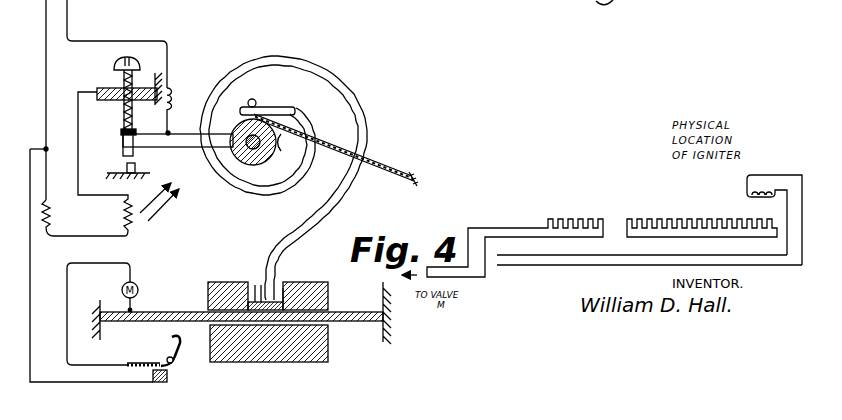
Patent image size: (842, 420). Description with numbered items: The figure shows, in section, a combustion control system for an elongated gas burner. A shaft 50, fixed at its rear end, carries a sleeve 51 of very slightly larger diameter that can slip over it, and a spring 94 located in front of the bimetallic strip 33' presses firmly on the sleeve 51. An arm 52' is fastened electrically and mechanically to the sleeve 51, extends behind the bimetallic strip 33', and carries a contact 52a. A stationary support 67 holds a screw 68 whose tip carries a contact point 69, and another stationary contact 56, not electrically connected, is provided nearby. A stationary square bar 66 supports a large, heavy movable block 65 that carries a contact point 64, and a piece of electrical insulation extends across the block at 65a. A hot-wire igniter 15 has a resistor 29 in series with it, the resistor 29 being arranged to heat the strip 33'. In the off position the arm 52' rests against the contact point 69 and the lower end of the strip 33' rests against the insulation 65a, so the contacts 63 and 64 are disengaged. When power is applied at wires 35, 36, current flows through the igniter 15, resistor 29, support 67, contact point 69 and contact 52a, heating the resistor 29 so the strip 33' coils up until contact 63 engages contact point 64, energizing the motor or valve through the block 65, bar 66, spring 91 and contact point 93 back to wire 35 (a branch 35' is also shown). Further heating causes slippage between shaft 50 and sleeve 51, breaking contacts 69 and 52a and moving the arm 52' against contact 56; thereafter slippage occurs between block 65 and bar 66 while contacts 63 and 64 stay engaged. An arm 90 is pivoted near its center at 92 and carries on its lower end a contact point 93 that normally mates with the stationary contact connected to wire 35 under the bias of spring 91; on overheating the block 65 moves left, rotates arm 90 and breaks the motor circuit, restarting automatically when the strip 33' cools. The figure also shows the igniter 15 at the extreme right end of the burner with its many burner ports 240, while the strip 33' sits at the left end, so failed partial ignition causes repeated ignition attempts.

The power wire 35 is at (33, 100).
The supply conductor branch 35' is at (91, 265).
The power wire 36 is at (67, 23).
The electrical hot-wire igniter 15 is at (55, 210).
The resistor 29 is at (133, 222).
The stationary support 67 is at (97, 90).
The screw 68 is at (114, 64).
The contact 52a is at (144, 102).
The contact point 69 is at (121, 129).
The arm 52' is at (178, 153).
The stationary contact 56 is at (127, 166).
The bimetallic strip 33' is at (289, 178).
The shaft 50 is at (283, 140).
The sleeve 51 is at (262, 163).
The spring 94 is at (337, 146).
The movable block 65 is at (207, 287).
The stationary square bar 66 is at (115, 322).
The contact 63 is at (257, 283).
The contact point 64 is at (255, 280).
The electrical insulation 65a is at (280, 285).
The spring 91 is at (148, 362).
The arm 90 is at (179, 342).
The pivot 92 is at (174, 361).
The contact point 93 is at (168, 377).
The burner ports 240 is at (571, 225).